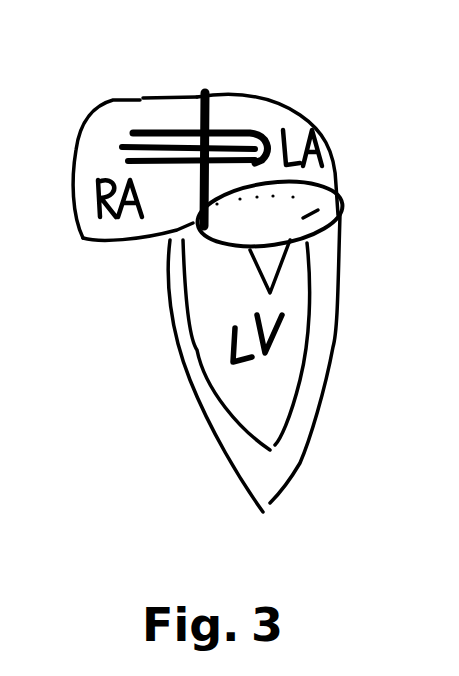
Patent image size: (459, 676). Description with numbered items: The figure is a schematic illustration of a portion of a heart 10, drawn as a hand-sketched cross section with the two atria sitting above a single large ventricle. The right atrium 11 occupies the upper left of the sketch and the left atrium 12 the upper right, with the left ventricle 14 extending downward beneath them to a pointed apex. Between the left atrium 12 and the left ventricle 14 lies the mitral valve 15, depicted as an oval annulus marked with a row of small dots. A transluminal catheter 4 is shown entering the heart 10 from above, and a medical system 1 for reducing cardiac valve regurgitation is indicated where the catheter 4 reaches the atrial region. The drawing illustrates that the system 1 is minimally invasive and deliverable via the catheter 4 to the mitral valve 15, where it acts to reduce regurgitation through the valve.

The medical system 1 is at (232, 116).
The catheter 4 is at (167, 128).
The heart 10 is at (68, 482).
The right atrium 11 is at (105, 157).
The left atrium 12 is at (263, 123).
The left ventricle 14 is at (292, 342).
The mitral valve 15 is at (337, 202).